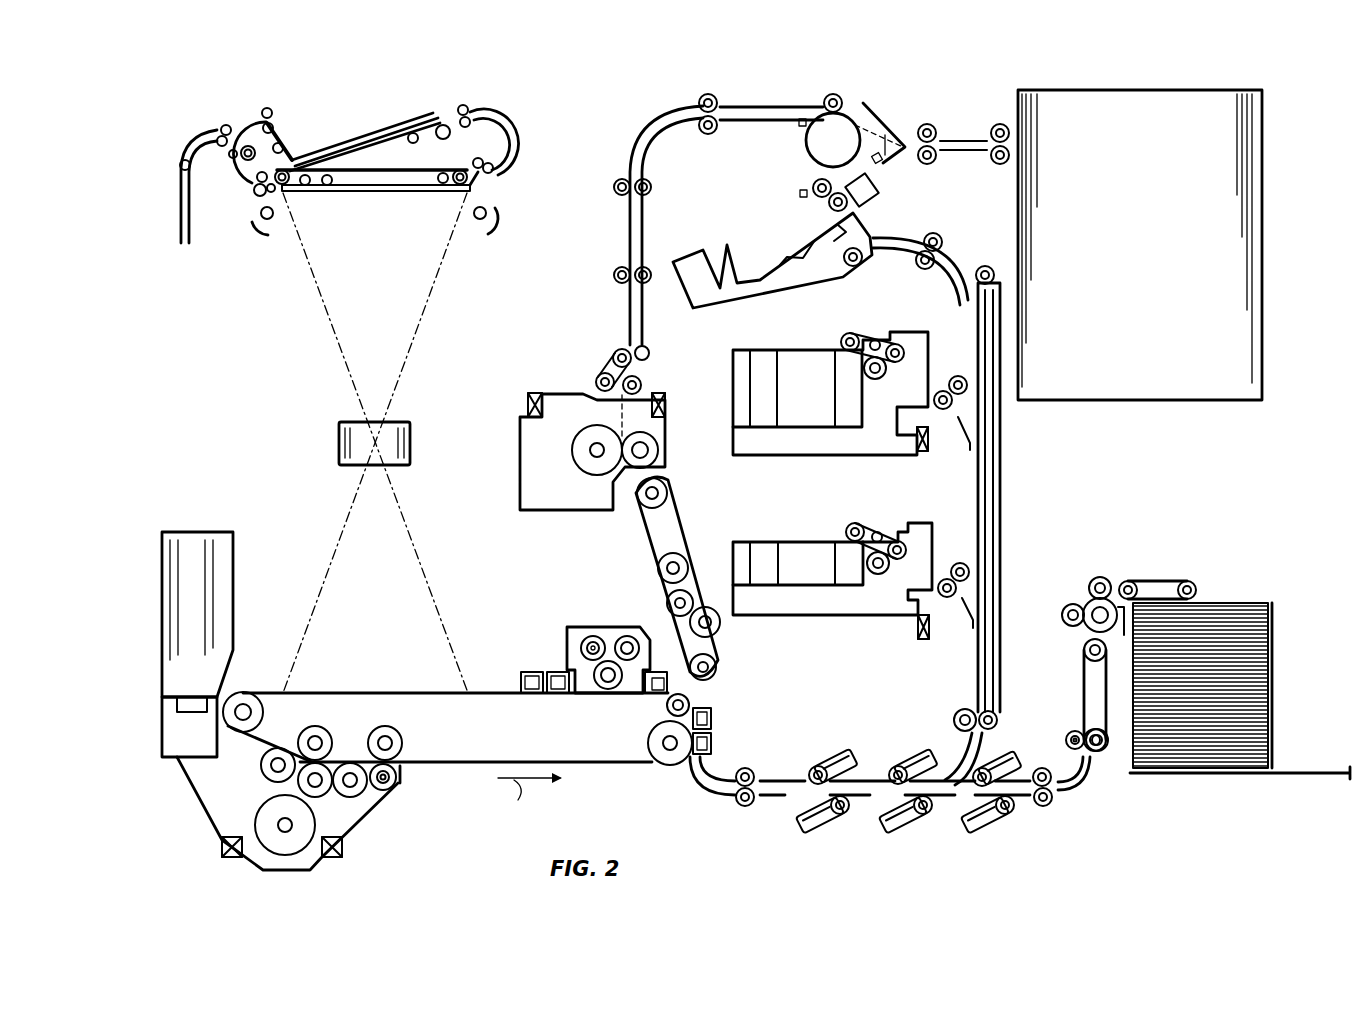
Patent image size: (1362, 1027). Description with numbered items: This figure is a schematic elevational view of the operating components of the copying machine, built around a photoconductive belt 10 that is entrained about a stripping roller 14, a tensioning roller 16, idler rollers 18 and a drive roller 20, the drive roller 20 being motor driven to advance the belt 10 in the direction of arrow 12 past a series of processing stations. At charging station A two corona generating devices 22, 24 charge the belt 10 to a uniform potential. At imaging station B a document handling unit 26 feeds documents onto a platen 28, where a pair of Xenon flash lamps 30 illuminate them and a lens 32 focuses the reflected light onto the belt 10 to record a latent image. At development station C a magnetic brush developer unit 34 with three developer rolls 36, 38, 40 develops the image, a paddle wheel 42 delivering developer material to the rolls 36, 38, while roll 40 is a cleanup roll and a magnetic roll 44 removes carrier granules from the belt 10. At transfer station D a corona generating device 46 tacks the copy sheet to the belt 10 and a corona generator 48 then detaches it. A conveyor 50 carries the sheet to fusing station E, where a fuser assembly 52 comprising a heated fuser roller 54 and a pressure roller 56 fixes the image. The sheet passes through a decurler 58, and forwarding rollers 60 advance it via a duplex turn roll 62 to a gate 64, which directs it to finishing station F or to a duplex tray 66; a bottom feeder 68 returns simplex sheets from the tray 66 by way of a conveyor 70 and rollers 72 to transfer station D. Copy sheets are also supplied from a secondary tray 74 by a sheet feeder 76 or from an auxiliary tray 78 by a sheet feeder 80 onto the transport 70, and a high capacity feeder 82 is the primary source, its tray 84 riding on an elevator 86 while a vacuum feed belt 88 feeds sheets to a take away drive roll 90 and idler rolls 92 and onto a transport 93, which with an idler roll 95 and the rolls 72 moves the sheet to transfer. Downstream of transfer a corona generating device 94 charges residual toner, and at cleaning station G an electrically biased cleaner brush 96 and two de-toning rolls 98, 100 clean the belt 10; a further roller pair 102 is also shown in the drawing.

The photoconductive belt 10 is at (500, 697).
The arrow 12 is at (529, 797).
The stripping roller 14 is at (665, 707).
The tensioning roller 16 is at (258, 705).
The idler rollers 18 is at (383, 728).
The drive roller 20 is at (664, 762).
The corona generating device 22 is at (556, 672).
The corona generating device 24 is at (523, 672).
The document handling unit 26 is at (520, 148).
The platen 28 is at (413, 194).
The Xenon flash lamps 30 is at (272, 221).
The lens 32 is at (400, 440).
The magnetic brush developer unit 34 is at (412, 797).
The developer roll 36 is at (254, 783).
The developer roll 38 is at (283, 791).
The developer roll 40 is at (339, 795).
The paddle wheel 42 is at (222, 842).
The magnetic roll 44 is at (400, 779).
The corona generating device 46 is at (712, 750).
The corona generator 48 is at (712, 712).
The conveyor 50 is at (728, 657).
The fuser assembly 52 is at (686, 410).
The heated fuser roller 54 is at (580, 458).
The pressure roller 56 is at (650, 455).
The decurler 58 is at (610, 372).
The forwarding rollers 60 is at (620, 182).
The duplex turn roll 62 is at (848, 148).
The gate 64 is at (885, 132).
The duplex tray 66 is at (760, 282).
The bottom feeder 68 is at (857, 268).
The conveyor 70 is at (1003, 482).
The rollers 72 is at (735, 787).
The secondary tray 74 is at (835, 447).
The sheet feeder 76 is at (873, 343).
The auxiliary tray 78 is at (877, 615).
The sheet feeder 80 is at (863, 528).
The high capacity feeder 82 is at (1297, 586).
The tray 84 is at (1225, 750).
The elevator 86 is at (1240, 775).
The vacuum feed belt 88 is at (1158, 580).
The take away drive roll 90 is at (1100, 624).
The idler rolls 92 is at (1102, 578).
The transport 93 is at (1085, 688).
The corona generating device 94 is at (670, 683).
The idler roll 95 is at (1090, 770).
The cleaner brush 96 is at (608, 639).
The de-toning roll 98 is at (625, 640).
The de-toning roll 100 is at (590, 640).
The feed roller pair 102 is at (1003, 124).
The charging station A is at (519, 655).
The imaging station B is at (432, 660).
The development station C is at (362, 870).
The transfer station D is at (744, 722).
The fusing station E is at (535, 385).
The finishing station F is at (1240, 420).
The cleaning station G is at (618, 612).